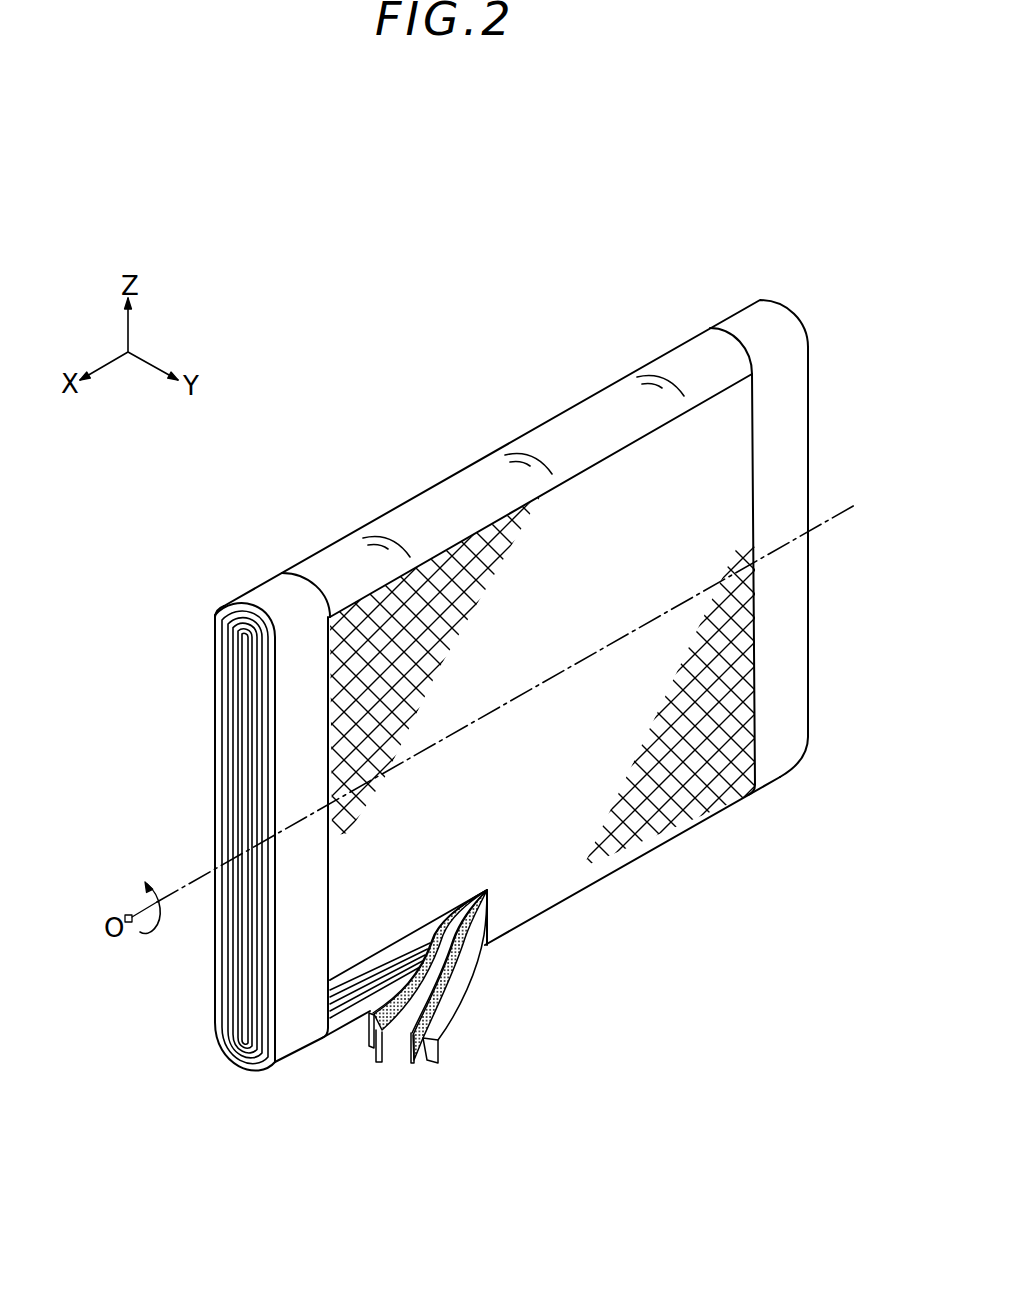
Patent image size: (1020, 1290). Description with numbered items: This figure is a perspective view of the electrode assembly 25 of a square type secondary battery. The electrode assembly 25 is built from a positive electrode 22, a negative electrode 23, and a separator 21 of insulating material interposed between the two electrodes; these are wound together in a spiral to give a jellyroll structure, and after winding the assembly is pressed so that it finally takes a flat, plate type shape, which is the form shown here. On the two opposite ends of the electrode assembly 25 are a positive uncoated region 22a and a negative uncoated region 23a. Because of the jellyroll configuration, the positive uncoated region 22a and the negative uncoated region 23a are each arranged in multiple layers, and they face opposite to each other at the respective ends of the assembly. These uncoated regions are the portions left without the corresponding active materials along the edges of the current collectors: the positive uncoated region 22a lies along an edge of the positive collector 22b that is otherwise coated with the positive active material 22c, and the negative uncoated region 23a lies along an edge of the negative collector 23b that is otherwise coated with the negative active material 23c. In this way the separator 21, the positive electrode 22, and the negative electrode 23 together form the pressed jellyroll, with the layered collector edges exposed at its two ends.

The separator 21 is at (462, 1033).
The positive electrode 22 is at (446, 1038).
The positive uncoated region 22a is at (213, 772).
The positive collector 22b is at (410, 1064).
The positive active material 22c is at (428, 1058).
The negative electrode 23 is at (377, 1034).
The negative uncoated region 23a is at (810, 674).
The negative collector 23b is at (369, 1015).
The negative active material 23c is at (377, 1045).
The electrode assembly 25 is at (472, 427).